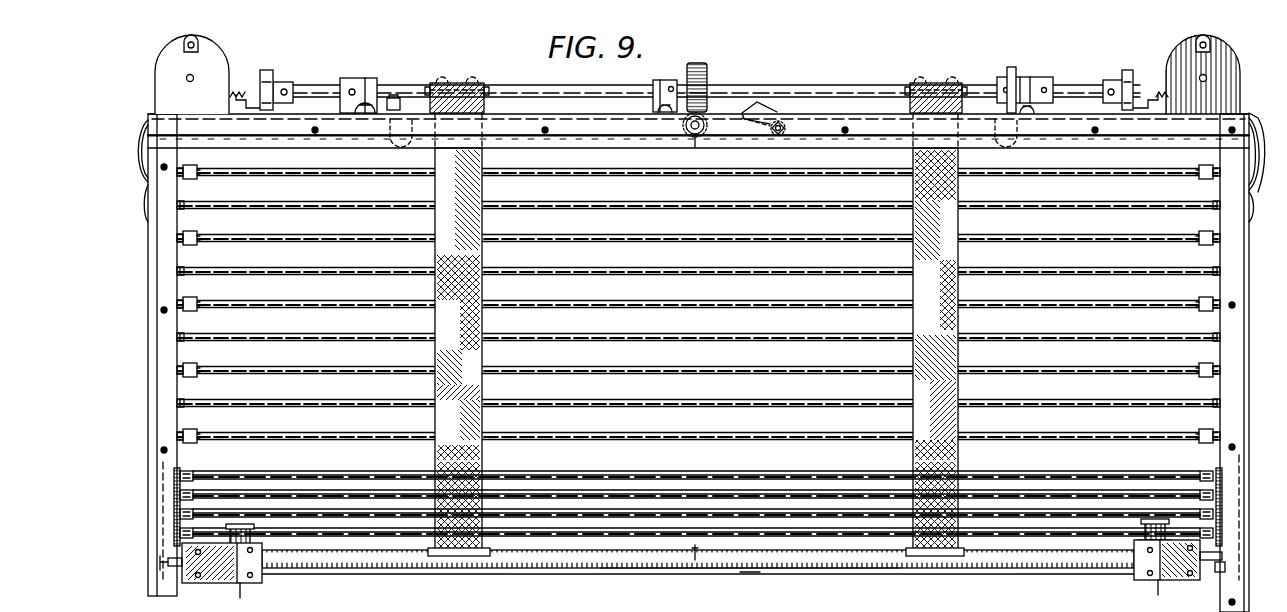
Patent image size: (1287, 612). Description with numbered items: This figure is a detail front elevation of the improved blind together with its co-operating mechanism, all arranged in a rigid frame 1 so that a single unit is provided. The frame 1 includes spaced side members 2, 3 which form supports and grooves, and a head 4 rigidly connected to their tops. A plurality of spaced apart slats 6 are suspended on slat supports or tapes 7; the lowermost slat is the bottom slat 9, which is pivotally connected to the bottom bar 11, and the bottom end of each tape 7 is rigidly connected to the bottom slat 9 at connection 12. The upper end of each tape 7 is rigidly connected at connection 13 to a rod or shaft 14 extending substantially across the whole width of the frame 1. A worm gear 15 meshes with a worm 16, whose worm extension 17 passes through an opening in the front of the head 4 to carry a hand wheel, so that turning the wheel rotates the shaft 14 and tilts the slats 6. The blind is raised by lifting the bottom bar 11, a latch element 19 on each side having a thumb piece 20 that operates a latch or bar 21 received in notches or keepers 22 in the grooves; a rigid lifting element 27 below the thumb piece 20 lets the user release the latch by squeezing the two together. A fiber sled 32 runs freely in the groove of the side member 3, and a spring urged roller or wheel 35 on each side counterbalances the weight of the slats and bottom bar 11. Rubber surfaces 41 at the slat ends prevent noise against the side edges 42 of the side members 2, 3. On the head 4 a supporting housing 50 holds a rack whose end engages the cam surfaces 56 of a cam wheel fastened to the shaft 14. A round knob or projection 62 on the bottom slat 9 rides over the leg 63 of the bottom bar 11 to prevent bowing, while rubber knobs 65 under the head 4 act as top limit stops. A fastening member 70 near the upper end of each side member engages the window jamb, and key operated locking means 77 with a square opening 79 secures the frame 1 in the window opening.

The rigid frame 1 is at (1236, 318).
The side member 2 is at (1232, 262).
The side member 3 is at (148, 335).
The head 4 is at (876, 118).
The slats 6 is at (607, 502).
The slat supports or tapes 7 is at (482, 220).
The bottom slat 9 is at (850, 545).
The bottom bar 11 is at (792, 552).
The tape connection 12 is at (470, 556).
The tape connection 13 is at (466, 82).
The rod or shaft 14 is at (445, 68).
The worm gear 15 is at (700, 63).
The worm 16 is at (684, 126).
The worm extension 17 is at (697, 136).
The latch element 19 is at (263, 568).
The thumb piece 20 is at (215, 160).
The latch or bar 21 is at (170, 558).
The notches or keepers 22 is at (165, 566).
The rigid lifting element 27 is at (240, 585).
The fiber piece or sled 32 is at (152, 490).
The roller or wheel 35 is at (172, 52).
The rubber surfaces 41 is at (198, 305).
The side edges 42 is at (158, 256).
The supporting housing 50 is at (243, 95).
The cam surfaces 56 is at (268, 70).
The round knob or projection 62 is at (697, 562).
The leg 63 is at (748, 572).
The rubber knobs 65 is at (398, 150).
The fastening member 70 is at (1259, 168).
The locking means 77 is at (773, 112).
The square opening 79 is at (781, 133).